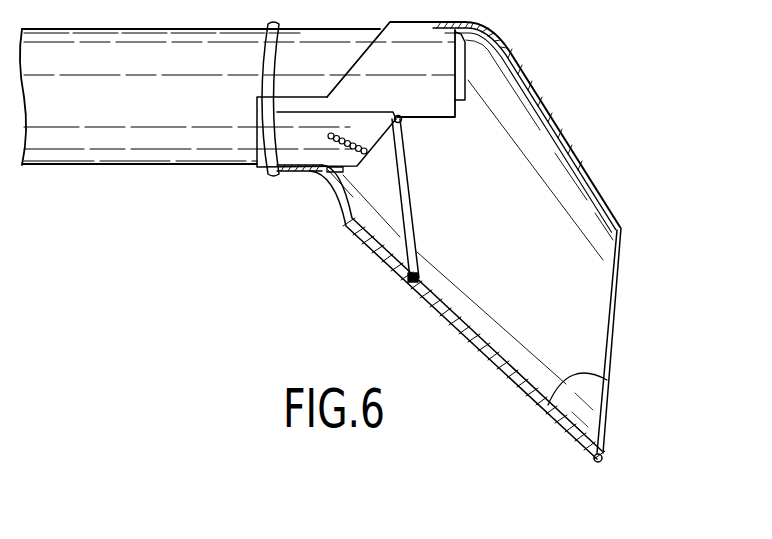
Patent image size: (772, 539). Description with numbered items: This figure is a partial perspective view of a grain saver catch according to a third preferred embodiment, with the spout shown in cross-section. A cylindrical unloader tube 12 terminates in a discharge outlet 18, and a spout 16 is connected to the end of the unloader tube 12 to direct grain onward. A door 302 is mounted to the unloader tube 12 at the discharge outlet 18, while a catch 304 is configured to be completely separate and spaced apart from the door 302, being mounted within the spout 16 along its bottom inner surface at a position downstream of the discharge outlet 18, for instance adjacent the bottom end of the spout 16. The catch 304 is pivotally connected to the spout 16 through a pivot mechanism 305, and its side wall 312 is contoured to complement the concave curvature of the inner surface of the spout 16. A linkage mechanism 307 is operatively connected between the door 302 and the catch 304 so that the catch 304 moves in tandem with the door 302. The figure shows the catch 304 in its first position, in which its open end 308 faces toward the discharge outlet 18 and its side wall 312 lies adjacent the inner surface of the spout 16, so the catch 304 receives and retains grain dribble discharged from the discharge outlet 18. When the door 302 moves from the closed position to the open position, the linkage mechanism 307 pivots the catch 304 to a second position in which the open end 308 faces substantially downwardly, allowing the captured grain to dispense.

The unloader tube 12 is at (132, 165).
The discharge outlet 18 is at (462, 70).
The spout 16 is at (585, 162).
The door 302 is at (402, 121).
The catch 304 is at (607, 400).
The pivot mechanism 305 is at (598, 465).
The linkage mechanism 307 is at (402, 229).
The open end 308 is at (572, 381).
The side wall 312 is at (565, 428).